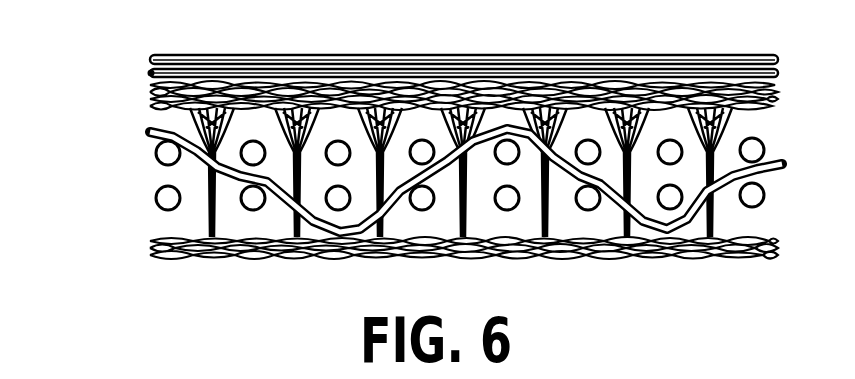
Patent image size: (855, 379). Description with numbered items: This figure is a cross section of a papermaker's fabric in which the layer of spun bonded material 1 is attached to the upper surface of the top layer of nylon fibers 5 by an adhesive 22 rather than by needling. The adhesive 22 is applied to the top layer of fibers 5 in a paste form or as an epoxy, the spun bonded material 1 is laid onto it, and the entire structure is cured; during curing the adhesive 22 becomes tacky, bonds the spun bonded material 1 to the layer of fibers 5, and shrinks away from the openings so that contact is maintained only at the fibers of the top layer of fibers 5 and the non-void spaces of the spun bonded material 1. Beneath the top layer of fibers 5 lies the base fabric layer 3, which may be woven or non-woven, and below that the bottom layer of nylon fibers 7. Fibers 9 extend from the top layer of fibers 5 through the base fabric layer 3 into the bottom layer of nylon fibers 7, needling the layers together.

The layer of spun bonded material 1 is at (156, 55).
The adhesive 22 is at (150, 74).
The top layer of nylon fibers 5 is at (155, 101).
The base fabric layer 3 is at (106, 175).
The bottom layer of nylon fibers 7 is at (150, 240).
The fibers 9 is at (213, 220).